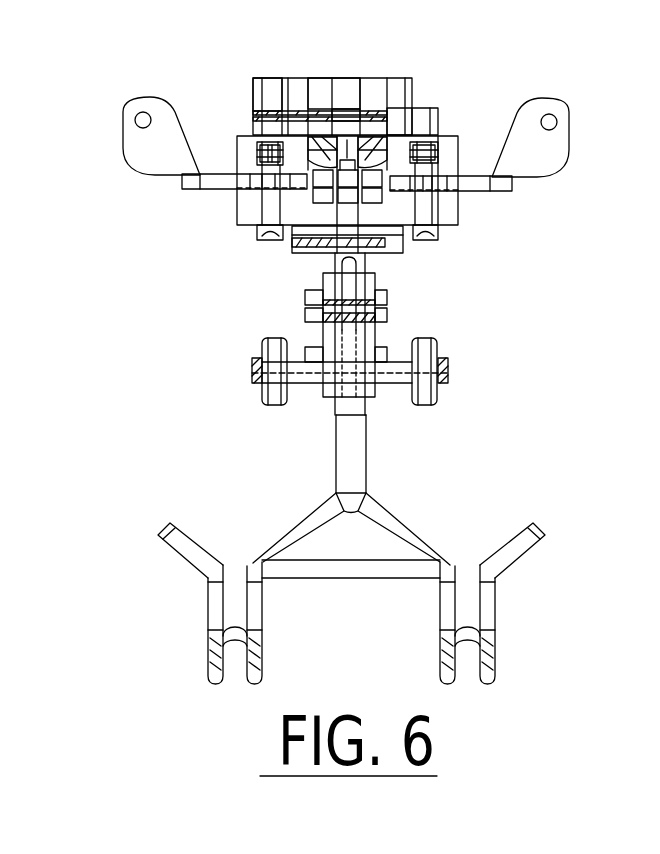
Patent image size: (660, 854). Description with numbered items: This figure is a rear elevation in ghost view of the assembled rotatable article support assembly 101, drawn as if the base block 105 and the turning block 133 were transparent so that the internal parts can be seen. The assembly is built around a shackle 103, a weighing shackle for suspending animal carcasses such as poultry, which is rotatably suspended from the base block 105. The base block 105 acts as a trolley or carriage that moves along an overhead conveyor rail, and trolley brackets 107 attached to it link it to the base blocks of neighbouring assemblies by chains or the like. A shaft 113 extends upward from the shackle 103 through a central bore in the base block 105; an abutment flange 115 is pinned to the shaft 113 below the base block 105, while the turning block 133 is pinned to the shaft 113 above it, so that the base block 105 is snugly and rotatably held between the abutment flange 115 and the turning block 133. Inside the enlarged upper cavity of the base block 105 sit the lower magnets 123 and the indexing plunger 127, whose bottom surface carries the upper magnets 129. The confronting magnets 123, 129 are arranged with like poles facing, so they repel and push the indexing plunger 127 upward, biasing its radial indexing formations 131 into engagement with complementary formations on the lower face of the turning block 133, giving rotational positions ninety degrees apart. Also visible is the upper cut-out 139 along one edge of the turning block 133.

The rotatable article support assembly 101 is at (340, 343).
The shackle 103 is at (348, 450).
The base block 105 is at (248, 202).
The trolley brackets 107 is at (160, 151).
The shaft 113 is at (362, 259).
The abutment flange 115 is at (317, 230).
The lower magnets 123 is at (233, 226).
The indexing plunger 127 is at (245, 122).
The upper magnets 129 is at (329, 74).
The indexing formations 131 is at (416, 82).
The turning block 133 is at (271, 92).
The upper cut-out 139 is at (422, 107).